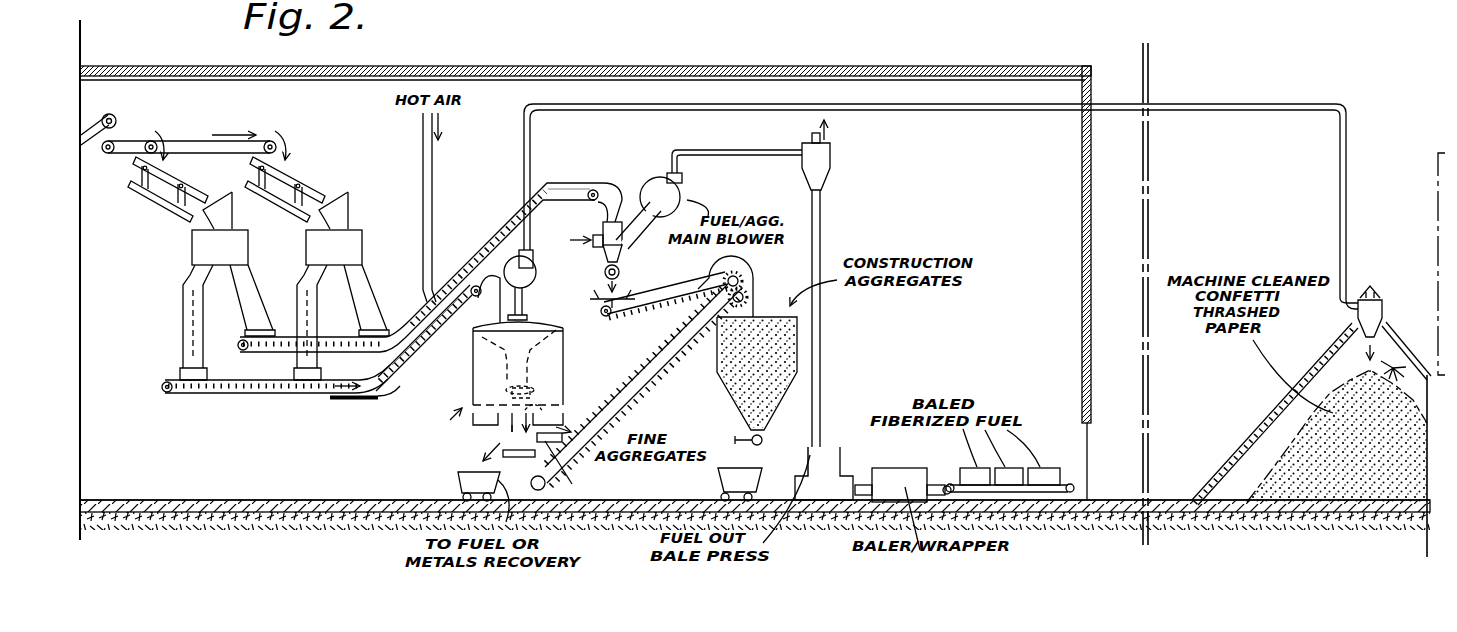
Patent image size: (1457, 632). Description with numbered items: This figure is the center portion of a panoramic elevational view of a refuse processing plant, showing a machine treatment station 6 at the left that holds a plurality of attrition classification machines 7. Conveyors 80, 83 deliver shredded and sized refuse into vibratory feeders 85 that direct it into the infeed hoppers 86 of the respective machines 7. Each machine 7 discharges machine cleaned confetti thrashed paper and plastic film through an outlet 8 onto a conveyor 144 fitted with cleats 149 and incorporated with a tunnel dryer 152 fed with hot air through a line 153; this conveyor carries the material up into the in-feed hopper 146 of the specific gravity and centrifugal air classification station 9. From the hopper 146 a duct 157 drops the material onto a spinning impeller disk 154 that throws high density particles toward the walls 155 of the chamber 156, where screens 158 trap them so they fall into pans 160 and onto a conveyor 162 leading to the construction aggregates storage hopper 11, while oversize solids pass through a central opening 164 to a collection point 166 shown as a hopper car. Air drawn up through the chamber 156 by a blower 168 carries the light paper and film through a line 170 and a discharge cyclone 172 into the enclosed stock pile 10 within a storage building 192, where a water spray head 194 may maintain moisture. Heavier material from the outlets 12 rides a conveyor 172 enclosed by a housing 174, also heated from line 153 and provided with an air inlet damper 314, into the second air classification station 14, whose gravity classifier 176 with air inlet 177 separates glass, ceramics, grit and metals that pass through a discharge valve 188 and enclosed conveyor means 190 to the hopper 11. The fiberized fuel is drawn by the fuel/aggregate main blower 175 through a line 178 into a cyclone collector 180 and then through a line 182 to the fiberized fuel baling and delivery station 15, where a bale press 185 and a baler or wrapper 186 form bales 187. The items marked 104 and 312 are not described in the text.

The conveyor 80 is at (90, 117).
The conveyor 83 is at (192, 140).
The machine treatment station 6 is at (292, 114).
The vibratory feeder 85 is at (160, 207).
The infeed hopper 86 is at (212, 205).
The attrition classification machine 7 is at (188, 257).
The outlet 12 is at (257, 312).
The outlet 8 is at (193, 372).
The air inlet damper 314 is at (226, 346).
The conveyor 144 is at (229, 390).
The tunnel dryer 152 is at (352, 403).
The in-feed hopper 146 is at (462, 345).
The cleats 149 is at (374, 393).
The hot air line 153 is at (432, 182).
The conveyor / discharge cyclone 172 is at (510, 212).
The housing 174 is at (557, 183).
The specific gravity air classification station 14 is at (632, 146).
The blower 168 is at (535, 268).
The line 170 is at (1025, 110).
The duct 157 is at (543, 323).
The chamber 156 is at (563, 339).
The walls 155 is at (565, 357).
The spinning impeller disk 154 is at (565, 376).
The specific gravity and centrifugal air classification station 9 is at (478, 430).
The central opening 164 is at (505, 423).
The pans 160 is at (556, 418).
The collection point 166 is at (458, 481).
The conveyor 162 is at (660, 368).
The screens 158 is at (557, 473).
The enclosed conveyor means 190 is at (677, 298).
The discharge valve 188 is at (620, 274).
The gravity classifier 176 is at (622, 243).
The inlet 177 is at (601, 225).
The fuel/aggregate main blower 175 is at (684, 182).
The line 178 is at (752, 125).
The cyclone collector 180 is at (831, 153).
The line 182 is at (824, 223).
The construction aggregates storage hopper 11 is at (801, 348).
The fiberized fuel baling and delivery station 15 is at (958, 376).
The press inlet 104 is at (827, 447).
The bale press 185 is at (840, 478).
The baler or wrapper 186 is at (905, 468).
The bales 187 is at (1045, 480).
The partition 312 is at (1168, 0).
The water spray head 194 is at (1395, 362).
The storage building 192 is at (1245, 450).
The stock pile 10 is at (1317, 450).